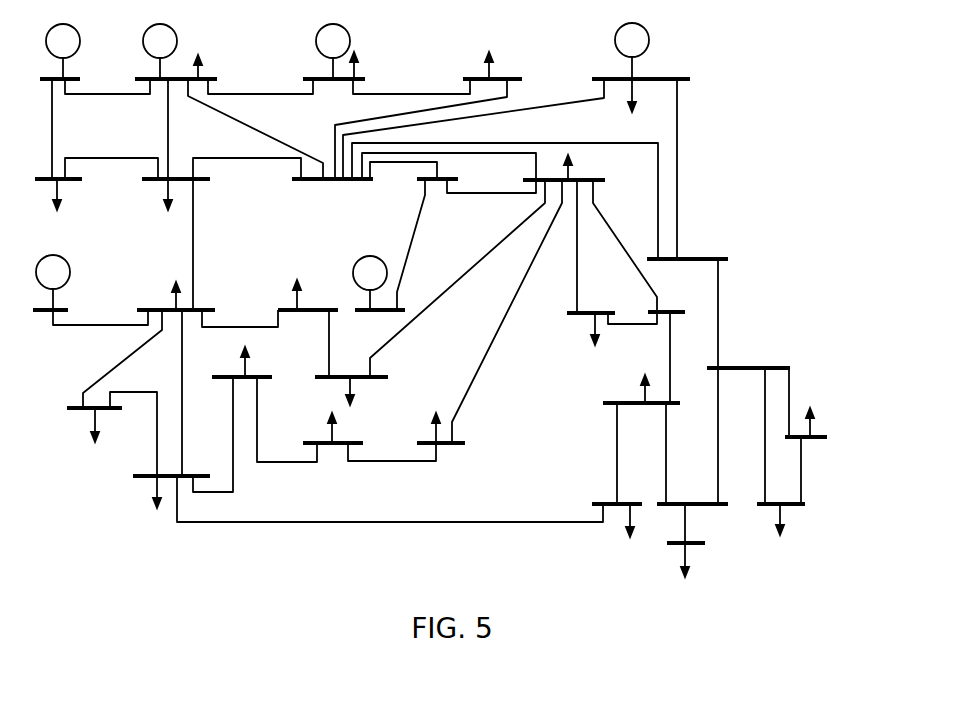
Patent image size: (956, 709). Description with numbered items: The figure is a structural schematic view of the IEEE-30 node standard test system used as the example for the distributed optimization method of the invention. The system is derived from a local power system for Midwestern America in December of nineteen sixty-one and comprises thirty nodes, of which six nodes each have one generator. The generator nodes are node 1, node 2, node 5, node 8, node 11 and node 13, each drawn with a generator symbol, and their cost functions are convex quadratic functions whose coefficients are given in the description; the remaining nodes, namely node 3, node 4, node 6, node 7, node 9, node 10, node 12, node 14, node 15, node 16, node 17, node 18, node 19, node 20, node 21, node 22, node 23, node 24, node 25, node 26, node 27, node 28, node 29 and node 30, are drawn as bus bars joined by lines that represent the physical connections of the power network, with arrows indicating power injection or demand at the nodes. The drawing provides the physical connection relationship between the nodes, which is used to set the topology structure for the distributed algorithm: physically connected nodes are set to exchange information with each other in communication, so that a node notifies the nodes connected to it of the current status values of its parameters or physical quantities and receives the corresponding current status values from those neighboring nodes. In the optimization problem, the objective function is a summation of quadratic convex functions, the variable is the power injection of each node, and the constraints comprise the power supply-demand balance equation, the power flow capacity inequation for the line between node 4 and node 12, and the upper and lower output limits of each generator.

The node 1 is at (49, 54).
The node 2 is at (169, 52).
The node 3 is at (48, 187).
The node 4 is at (188, 190).
The node 5 is at (345, 51).
The node 6 is at (342, 189).
The node 7 is at (502, 69).
The node 8 is at (641, 67).
The node 9 is at (448, 184).
The node 10 is at (567, 168).
The node 11 is at (394, 283).
The node 12 is at (193, 299).
The node 13 is at (38, 300).
The node 14 is at (75, 425).
The node 15 is at (153, 492).
The node 16 is at (308, 295).
The node 17 is at (366, 378).
The node 18 is at (232, 362).
The node 19 is at (340, 428).
The node 20 is at (457, 440).
The node 21 is at (586, 332).
The node 22 is at (676, 331).
The node 23 is at (624, 508).
The node 24 is at (635, 390).
The node 25 is at (704, 489).
The node 26 is at (704, 557).
The node 27 is at (769, 369).
The node 28 is at (705, 260).
The node 29 is at (801, 510).
The node 30 is at (823, 430).